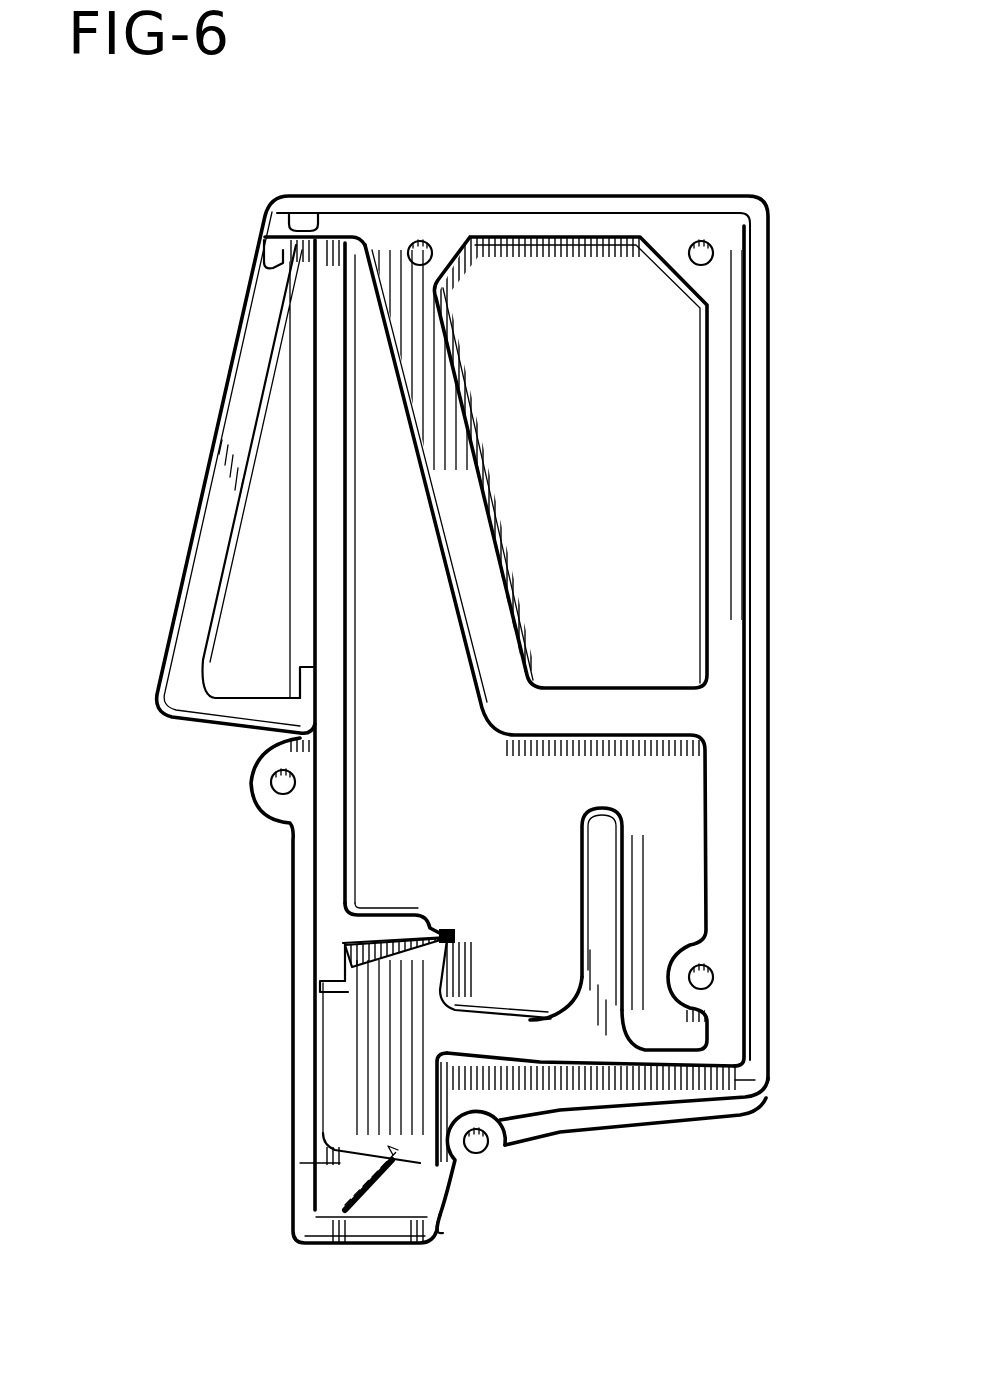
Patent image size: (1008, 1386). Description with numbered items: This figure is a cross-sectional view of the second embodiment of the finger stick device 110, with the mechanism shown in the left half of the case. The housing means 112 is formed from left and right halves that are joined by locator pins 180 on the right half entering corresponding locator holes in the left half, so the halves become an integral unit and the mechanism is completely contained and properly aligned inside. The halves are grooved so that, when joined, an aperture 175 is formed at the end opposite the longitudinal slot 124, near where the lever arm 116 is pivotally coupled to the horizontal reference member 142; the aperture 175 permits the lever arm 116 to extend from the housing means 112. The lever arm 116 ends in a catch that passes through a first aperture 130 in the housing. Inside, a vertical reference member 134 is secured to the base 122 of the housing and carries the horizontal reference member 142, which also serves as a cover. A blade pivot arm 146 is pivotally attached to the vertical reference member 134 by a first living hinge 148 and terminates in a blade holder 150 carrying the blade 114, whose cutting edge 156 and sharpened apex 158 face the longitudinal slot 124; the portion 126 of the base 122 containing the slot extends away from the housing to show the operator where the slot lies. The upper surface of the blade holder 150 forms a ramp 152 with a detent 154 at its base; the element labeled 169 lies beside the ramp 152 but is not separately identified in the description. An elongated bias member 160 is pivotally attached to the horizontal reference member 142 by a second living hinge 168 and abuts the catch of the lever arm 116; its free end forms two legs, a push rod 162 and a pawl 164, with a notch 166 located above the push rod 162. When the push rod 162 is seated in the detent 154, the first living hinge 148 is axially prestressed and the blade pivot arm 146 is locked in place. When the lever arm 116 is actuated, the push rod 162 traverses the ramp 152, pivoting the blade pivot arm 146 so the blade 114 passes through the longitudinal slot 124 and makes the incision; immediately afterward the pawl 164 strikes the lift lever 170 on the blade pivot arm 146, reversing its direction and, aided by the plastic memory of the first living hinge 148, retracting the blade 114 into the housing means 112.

The finger stick device 110 is at (660, 92).
The housing means 112 is at (277, 197).
The lever arm 116 is at (240, 422).
The bias member 160 is at (323, 590).
The first aperture 130 is at (290, 708).
The second living hinge 168 is at (313, 262).
The aperture 175 is at (318, 212).
The horizontal reference member 142 is at (357, 226).
The locator pins 180 is at (700, 242).
The vertical reference member 134 is at (740, 812).
The pawl 164 is at (400, 912).
The notch 166 is at (316, 925).
The push rod 162 is at (330, 958).
The detent 154 is at (348, 992).
The ramp 152 is at (455, 930).
The cam surface 169 is at (458, 942).
The lift lever 170 is at (613, 893).
The blade pivot arm 146 is at (663, 1070).
The first living hinge 148 is at (720, 1070).
The portion of the base 126 is at (505, 1150).
The blade 114 is at (347, 1164).
The sharpened apex 158 is at (313, 1215).
The longitudinal slot 124 is at (343, 1243).
The cutting edge 156 is at (373, 1183).
The blade holder 150 is at (433, 1232).
The base 122 is at (443, 1233).